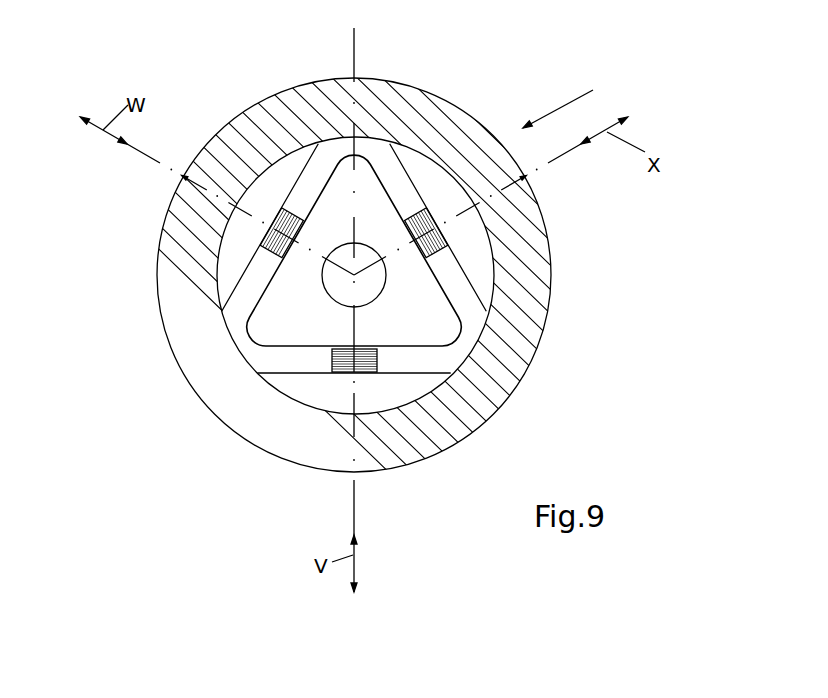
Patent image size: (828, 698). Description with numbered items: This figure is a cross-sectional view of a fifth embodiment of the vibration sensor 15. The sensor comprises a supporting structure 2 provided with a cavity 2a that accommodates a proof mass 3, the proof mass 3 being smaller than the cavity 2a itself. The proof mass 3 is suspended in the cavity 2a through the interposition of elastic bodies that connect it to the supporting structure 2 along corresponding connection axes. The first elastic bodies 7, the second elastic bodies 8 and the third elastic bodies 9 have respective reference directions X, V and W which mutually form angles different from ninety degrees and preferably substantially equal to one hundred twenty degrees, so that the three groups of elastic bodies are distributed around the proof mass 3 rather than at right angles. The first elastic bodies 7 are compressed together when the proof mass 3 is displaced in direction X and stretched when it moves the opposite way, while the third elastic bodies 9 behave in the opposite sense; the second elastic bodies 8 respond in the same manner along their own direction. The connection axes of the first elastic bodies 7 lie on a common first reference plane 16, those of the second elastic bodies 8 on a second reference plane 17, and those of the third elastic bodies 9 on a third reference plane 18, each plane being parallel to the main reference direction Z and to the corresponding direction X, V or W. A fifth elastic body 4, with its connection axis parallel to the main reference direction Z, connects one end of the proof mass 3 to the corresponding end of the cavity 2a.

The supporting structure 2 is at (507, 332).
The cavity 2a is at (470, 370).
The proof mass 3 is at (362, 185).
The fifth elastic body 4 is at (322, 298).
The first elastic bodies 7 is at (448, 238).
The second elastic bodies 8 is at (338, 381).
The third elastic bodies 9 is at (275, 208).
The vibration sensor 15 is at (571, 102).
The first reference plane 16 is at (550, 160).
The second reference plane 17 is at (354, 506).
The third reference plane 18 is at (148, 157).